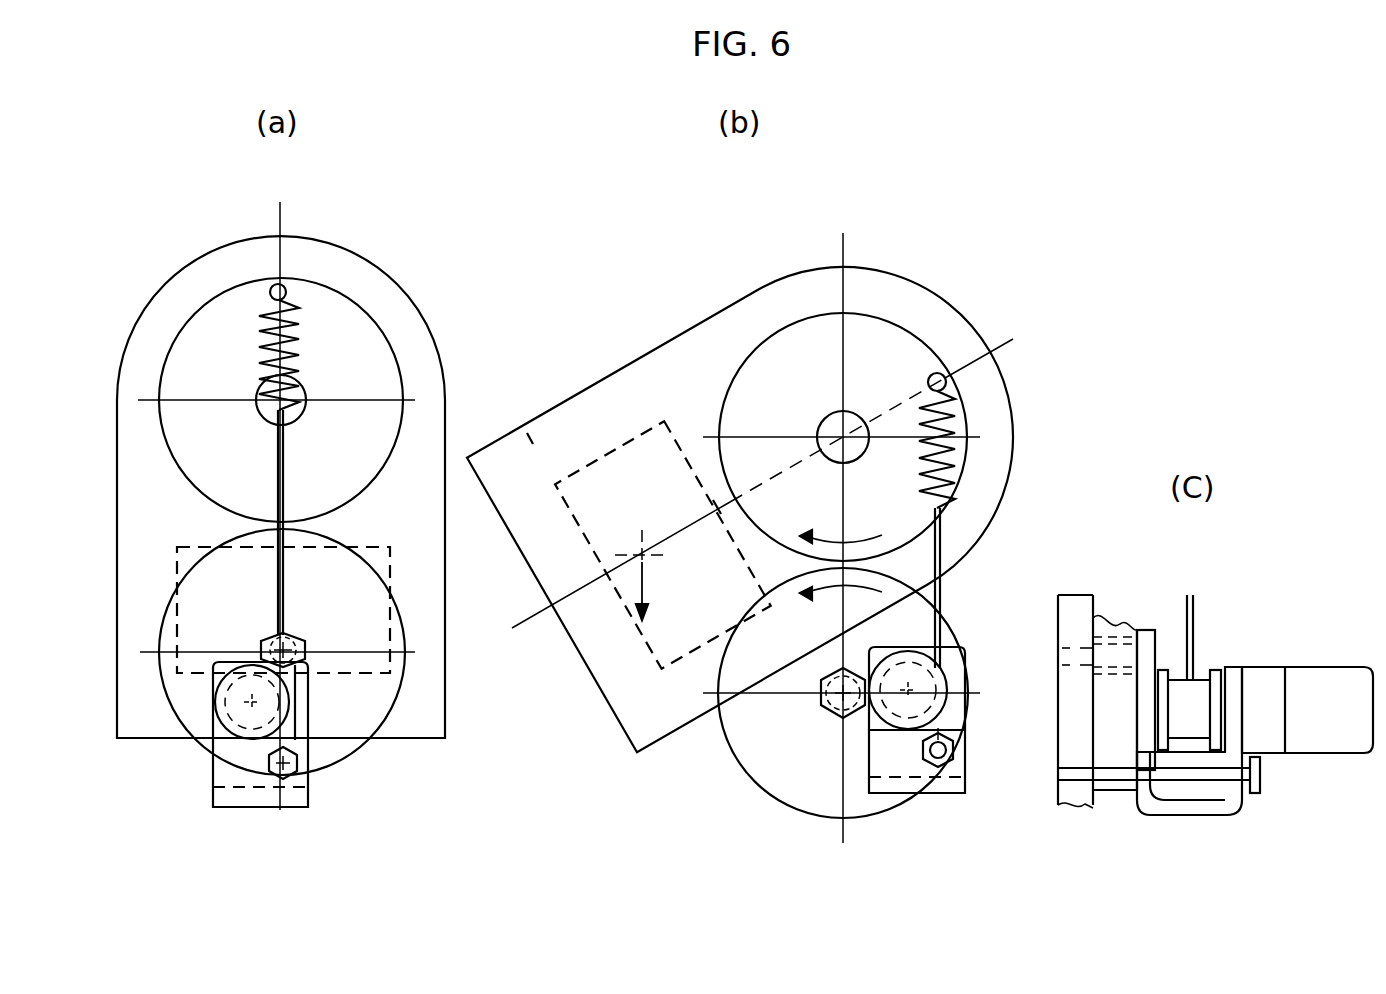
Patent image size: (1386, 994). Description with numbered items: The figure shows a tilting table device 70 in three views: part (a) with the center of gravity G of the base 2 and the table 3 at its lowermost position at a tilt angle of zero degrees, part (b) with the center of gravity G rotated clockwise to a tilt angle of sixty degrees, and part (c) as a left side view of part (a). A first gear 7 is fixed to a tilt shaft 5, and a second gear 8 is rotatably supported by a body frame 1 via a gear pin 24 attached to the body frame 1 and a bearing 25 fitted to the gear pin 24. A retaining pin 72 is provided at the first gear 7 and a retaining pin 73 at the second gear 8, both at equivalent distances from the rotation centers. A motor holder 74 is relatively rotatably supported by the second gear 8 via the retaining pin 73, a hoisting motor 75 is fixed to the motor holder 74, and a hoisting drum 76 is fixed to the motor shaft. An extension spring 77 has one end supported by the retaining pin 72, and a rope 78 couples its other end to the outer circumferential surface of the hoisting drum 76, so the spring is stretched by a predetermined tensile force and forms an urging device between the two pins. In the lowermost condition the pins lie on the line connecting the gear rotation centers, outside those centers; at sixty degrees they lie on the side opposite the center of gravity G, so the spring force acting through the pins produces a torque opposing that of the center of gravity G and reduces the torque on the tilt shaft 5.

The body frame 1 is at (1075, 610).
The base 2 is at (672, 340).
The table 3 is at (661, 419).
The tilt shaft 5 is at (825, 418).
The first gear 7 is at (880, 312).
The second gear 8 is at (765, 793).
The gear pin 24 is at (843, 719).
The bearing 25 is at (822, 719).
The tilting table device 70 is at (688, 266).
The retaining pin 72 is at (929, 380).
The retaining pin 73 is at (958, 748).
The motor holder 74 is at (940, 792).
The hoisting motor 75 is at (950, 702).
The hoisting drum 76 is at (941, 626).
The extension spring 77 is at (956, 406).
The rope 78 is at (942, 556).
The center of gravity G is at (632, 555).